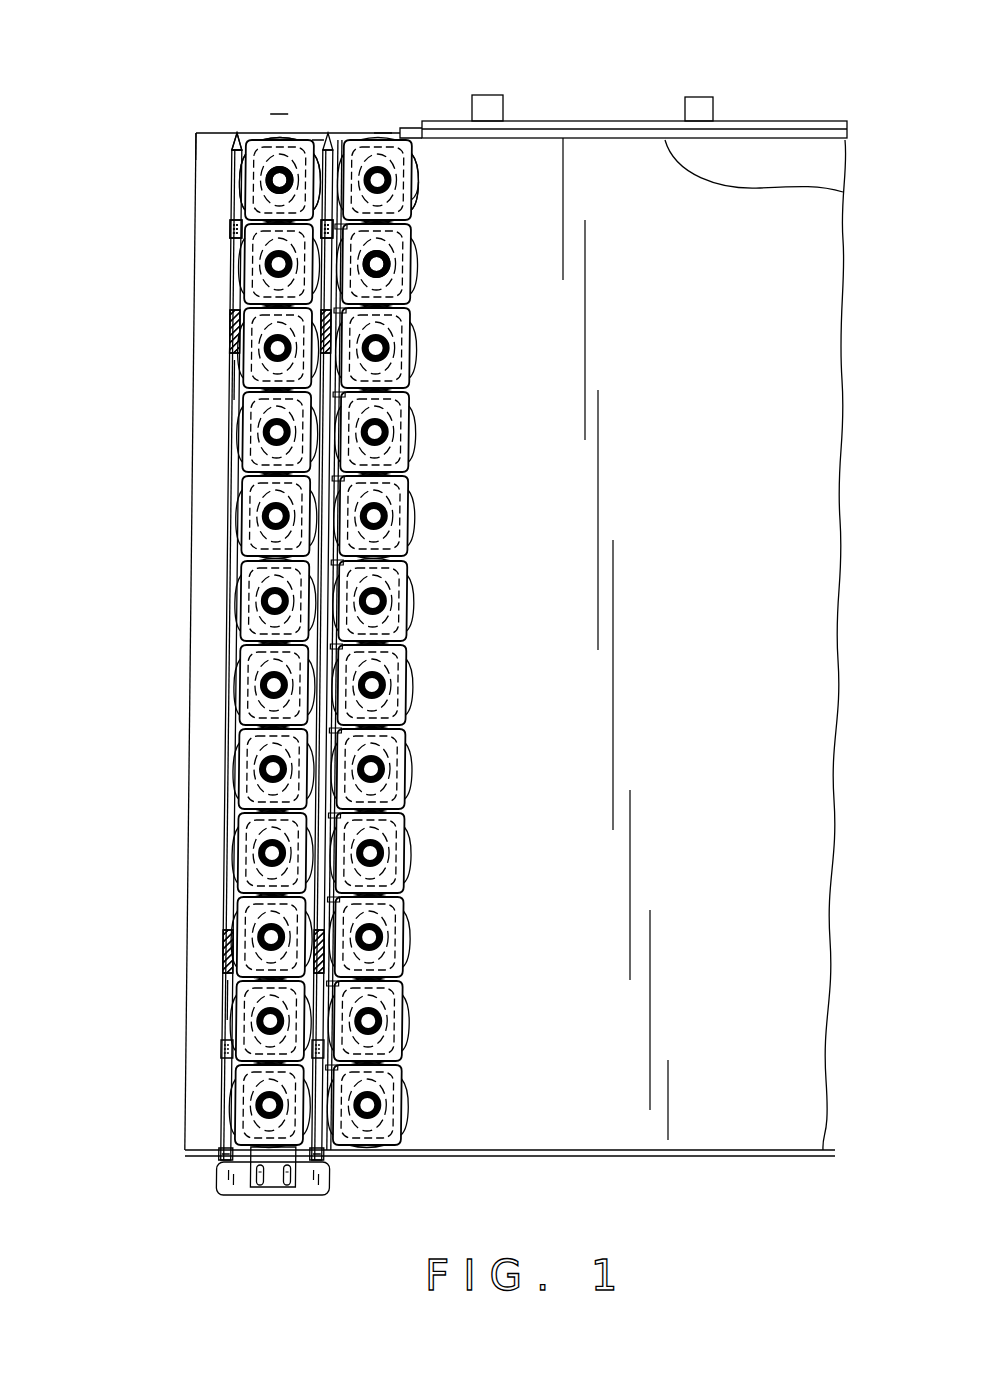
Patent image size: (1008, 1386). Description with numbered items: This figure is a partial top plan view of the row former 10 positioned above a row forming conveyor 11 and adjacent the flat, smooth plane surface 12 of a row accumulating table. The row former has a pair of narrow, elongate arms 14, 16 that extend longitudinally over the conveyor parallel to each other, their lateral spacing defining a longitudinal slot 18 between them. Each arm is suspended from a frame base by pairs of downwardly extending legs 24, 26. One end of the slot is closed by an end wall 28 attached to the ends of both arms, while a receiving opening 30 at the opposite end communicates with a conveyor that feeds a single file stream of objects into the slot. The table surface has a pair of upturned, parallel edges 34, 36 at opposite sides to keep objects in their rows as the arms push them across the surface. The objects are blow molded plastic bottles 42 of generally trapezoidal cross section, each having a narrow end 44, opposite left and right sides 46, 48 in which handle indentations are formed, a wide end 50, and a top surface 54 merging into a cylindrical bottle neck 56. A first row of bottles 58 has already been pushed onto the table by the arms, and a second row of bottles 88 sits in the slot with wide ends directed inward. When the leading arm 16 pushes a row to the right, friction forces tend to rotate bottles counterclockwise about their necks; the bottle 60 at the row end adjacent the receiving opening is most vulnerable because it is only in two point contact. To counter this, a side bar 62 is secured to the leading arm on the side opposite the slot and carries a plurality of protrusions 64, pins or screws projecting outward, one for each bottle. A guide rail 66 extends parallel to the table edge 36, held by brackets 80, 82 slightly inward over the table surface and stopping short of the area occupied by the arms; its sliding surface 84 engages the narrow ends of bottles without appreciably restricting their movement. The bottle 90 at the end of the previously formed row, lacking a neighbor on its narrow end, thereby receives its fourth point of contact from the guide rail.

The row former 10 is at (208, 327).
The row forming conveyor 11 is at (278, 110).
The plane surface 12 is at (745, 1098).
The arm 14 is at (230, 725).
The leading arm 16 is at (243, 633).
The longitudinal slot 18 is at (302, 128).
The legs 24 is at (235, 345).
The legs 26 is at (233, 385).
The end wall 28 is at (240, 1190).
The receiving opening 30 is at (265, 110).
The table edge 34 is at (556, 1156).
The table edge 36 is at (407, 127).
The bottles 42 is at (268, 132).
The narrow end 44 is at (285, 133).
The left side 46 is at (243, 178).
The right side 48 is at (357, 137).
The wide end 50 is at (232, 237).
The top surface 54 is at (243, 200).
The bottle neck 56 is at (233, 148).
The first row of bottles 58 is at (430, 172).
The bottle 60 is at (253, 133).
The side bar 62 is at (332, 893).
The protrusions 64 is at (345, 920).
The guide rail 66 is at (612, 121).
The bracket 80 is at (488, 95).
The bracket 82 is at (700, 97).
The sliding surface 84 is at (843, 190).
The second row of bottles 88 is at (318, 137).
The bottle 90 is at (383, 127).